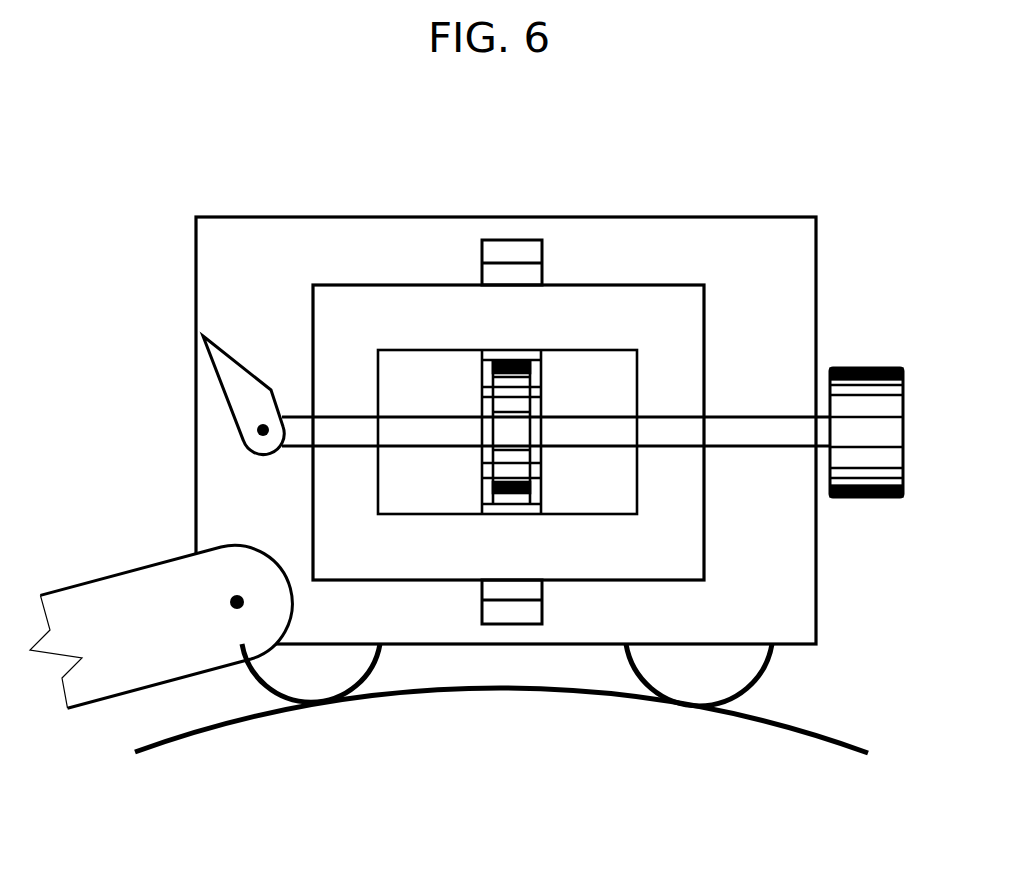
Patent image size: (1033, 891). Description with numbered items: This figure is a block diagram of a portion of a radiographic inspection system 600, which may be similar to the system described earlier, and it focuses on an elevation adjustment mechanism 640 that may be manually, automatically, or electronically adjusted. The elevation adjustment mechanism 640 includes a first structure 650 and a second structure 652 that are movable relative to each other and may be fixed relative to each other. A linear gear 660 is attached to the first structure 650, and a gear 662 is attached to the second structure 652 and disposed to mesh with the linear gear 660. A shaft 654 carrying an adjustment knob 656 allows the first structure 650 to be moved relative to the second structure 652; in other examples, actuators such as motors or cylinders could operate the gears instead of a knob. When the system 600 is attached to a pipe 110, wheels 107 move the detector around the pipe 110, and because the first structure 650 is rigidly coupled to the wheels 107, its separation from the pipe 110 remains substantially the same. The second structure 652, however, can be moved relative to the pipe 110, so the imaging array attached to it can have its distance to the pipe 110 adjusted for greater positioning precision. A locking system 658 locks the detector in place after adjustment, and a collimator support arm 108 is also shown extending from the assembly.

The radiographic inspection system 600 is at (107, 111).
The elevation adjustment mechanism 640 is at (151, 211).
The first structure 650 is at (290, 216).
The second structure 652 is at (704, 343).
The shaft 654 is at (780, 448).
The adjustment knob 656 is at (867, 368).
The locking system 658 is at (220, 390).
The linear gear 660 is at (513, 240).
The gear 662 is at (493, 464).
The collimator support arm 108 is at (157, 598).
The wheels 107 is at (638, 681).
The pipe 110 is at (248, 722).